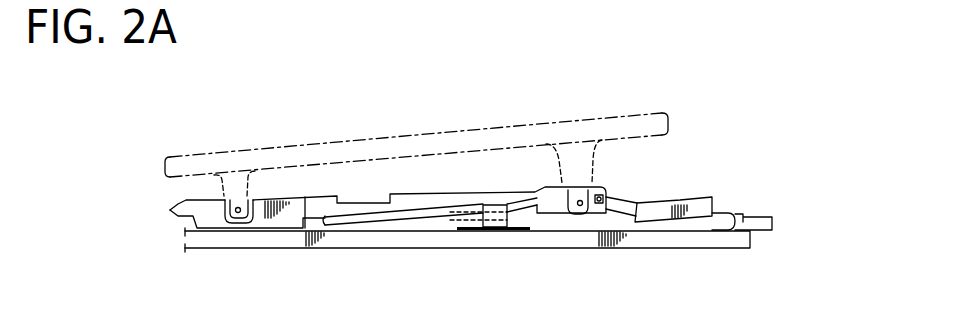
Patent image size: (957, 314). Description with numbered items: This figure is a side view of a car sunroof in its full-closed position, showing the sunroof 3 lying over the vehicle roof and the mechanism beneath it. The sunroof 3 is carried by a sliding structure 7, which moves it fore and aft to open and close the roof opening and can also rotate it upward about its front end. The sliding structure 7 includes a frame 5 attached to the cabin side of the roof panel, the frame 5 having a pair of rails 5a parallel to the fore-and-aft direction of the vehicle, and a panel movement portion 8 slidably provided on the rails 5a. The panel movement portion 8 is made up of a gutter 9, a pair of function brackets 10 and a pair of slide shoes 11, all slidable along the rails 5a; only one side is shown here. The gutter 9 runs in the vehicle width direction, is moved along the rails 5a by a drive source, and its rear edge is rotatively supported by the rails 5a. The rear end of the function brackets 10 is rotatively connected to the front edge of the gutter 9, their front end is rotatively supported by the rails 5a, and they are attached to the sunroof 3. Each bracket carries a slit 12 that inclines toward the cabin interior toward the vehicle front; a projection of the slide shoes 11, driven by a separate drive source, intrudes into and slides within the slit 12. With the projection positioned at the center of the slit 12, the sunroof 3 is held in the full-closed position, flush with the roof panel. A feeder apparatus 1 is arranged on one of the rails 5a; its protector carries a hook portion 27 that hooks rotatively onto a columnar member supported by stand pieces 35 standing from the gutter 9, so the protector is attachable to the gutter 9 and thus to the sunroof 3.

The feeder apparatus 1 is at (757, 227).
The sunroof 3 is at (577, 120).
The frame 5 is at (245, 249).
The rails 5a is at (288, 240).
The sliding structure 7 is at (693, 187).
The panel movement portion 8 is at (625, 188).
The gutter 9 is at (663, 222).
The function brackets 10 is at (425, 212).
The slide shoes 11 is at (492, 232).
The slit 12 is at (540, 203).
The hook portion 27 is at (763, 232).
The stand pieces 35 is at (727, 232).